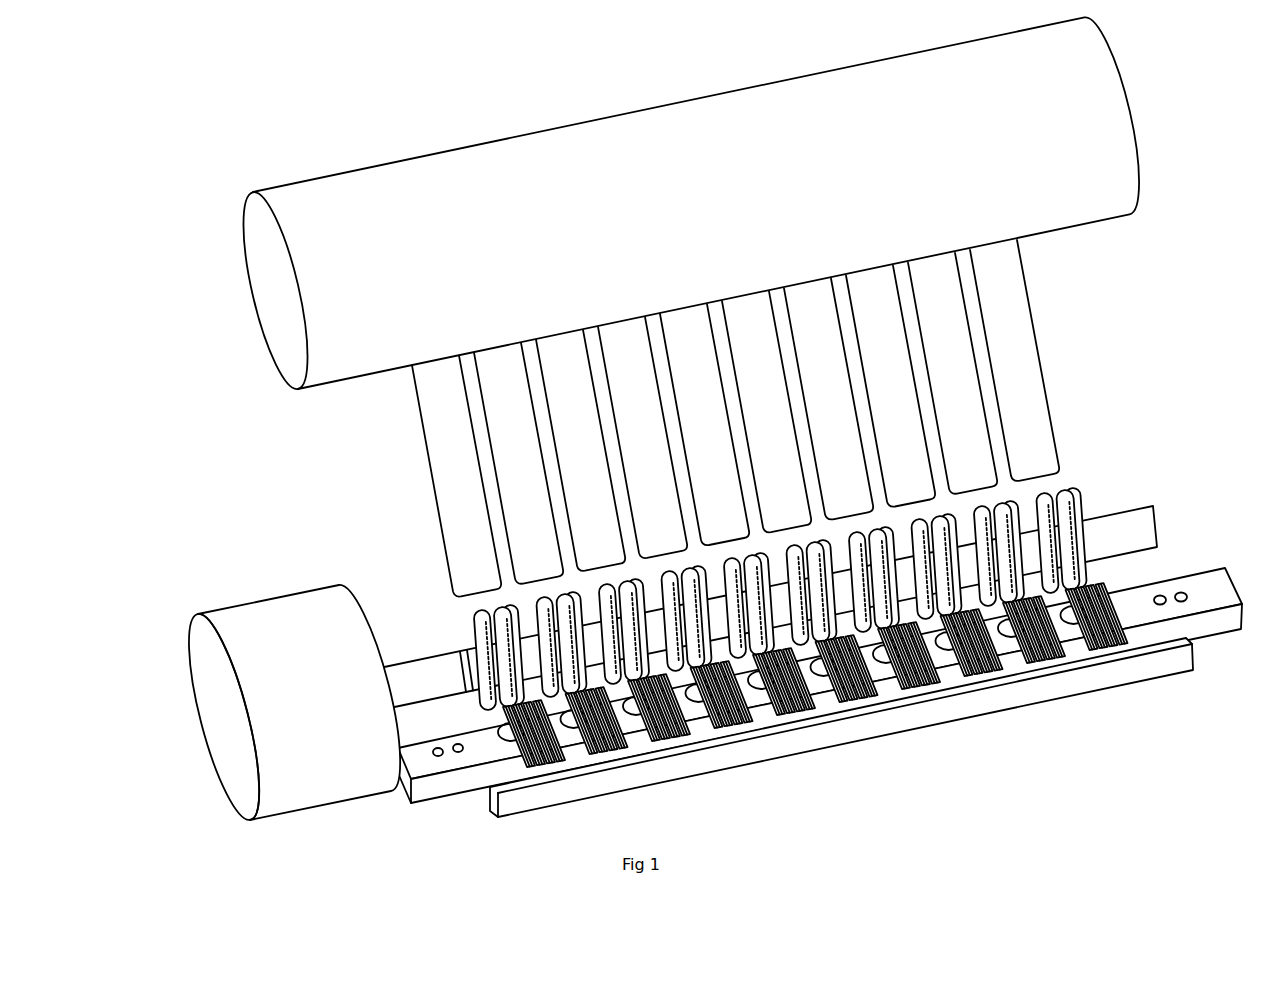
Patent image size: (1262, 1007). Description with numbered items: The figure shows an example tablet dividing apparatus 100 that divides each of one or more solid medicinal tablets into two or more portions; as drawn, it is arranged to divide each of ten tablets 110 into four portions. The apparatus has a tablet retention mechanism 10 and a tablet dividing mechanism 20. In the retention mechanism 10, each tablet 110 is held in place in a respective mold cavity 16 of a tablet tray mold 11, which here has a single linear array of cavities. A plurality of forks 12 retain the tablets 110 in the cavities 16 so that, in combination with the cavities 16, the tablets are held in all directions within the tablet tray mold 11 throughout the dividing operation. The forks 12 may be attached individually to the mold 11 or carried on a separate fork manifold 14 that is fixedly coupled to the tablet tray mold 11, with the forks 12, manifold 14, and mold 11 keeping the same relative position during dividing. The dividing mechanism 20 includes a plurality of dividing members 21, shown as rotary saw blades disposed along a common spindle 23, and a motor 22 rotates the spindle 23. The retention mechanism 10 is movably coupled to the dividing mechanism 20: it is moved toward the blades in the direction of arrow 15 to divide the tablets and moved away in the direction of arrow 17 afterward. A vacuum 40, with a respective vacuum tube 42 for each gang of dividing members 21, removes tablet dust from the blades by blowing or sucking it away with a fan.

The tablet dividing apparatus 100 is at (551, 80).
The vacuum 40 is at (255, 309).
The vacuum tube 42 is at (437, 512).
The motor 22 is at (200, 726).
The dividing members 21 is at (496, 620).
The spindle 23 is at (1035, 540).
The tablets 110 is at (630, 727).
The mold cavity 16 is at (820, 690).
The fork manifold 14 is at (867, 703).
The forks 12 is at (1010, 665).
The tablet tray mold 11 is at (1223, 618).
The tablet retention mechanism 10 is at (841, 727).
The arrow 17 is at (488, 888).
The arrow 15 is at (1187, 473).
The tablet dividing mechanism 20 is at (1135, 495).